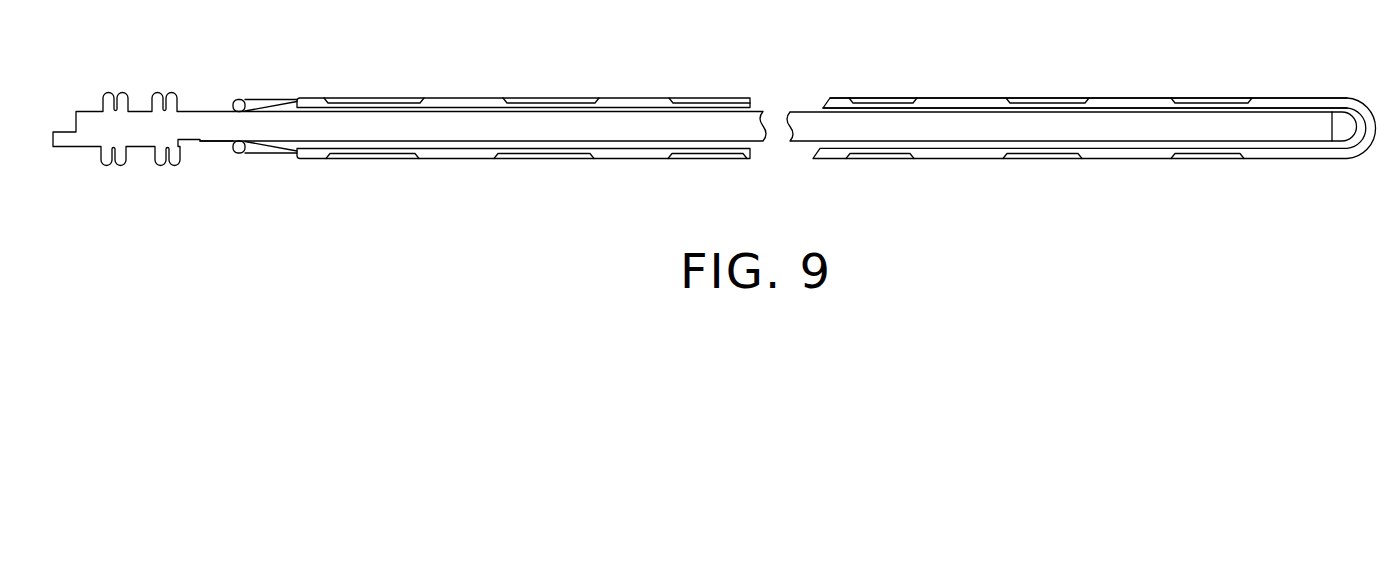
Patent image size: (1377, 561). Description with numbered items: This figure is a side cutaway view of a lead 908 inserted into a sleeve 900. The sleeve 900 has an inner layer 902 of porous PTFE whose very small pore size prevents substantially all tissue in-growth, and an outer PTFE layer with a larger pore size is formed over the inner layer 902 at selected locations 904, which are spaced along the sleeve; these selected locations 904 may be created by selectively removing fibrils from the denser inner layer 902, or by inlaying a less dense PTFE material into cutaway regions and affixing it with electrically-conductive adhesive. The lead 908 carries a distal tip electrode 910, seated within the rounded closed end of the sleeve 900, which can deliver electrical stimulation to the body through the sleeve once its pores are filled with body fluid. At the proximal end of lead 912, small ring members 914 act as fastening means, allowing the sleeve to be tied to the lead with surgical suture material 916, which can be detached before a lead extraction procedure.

The sleeve 900 is at (975, 67).
The inner layer 902 is at (1278, 99).
The selected locations 904 is at (388, 98).
The lead 908 is at (1198, 128).
The distal tip electrode 910 is at (1343, 129).
The proximal end of lead 912 is at (196, 183).
The ring members 914 is at (235, 99).
The surgical suture material 916 is at (270, 99).